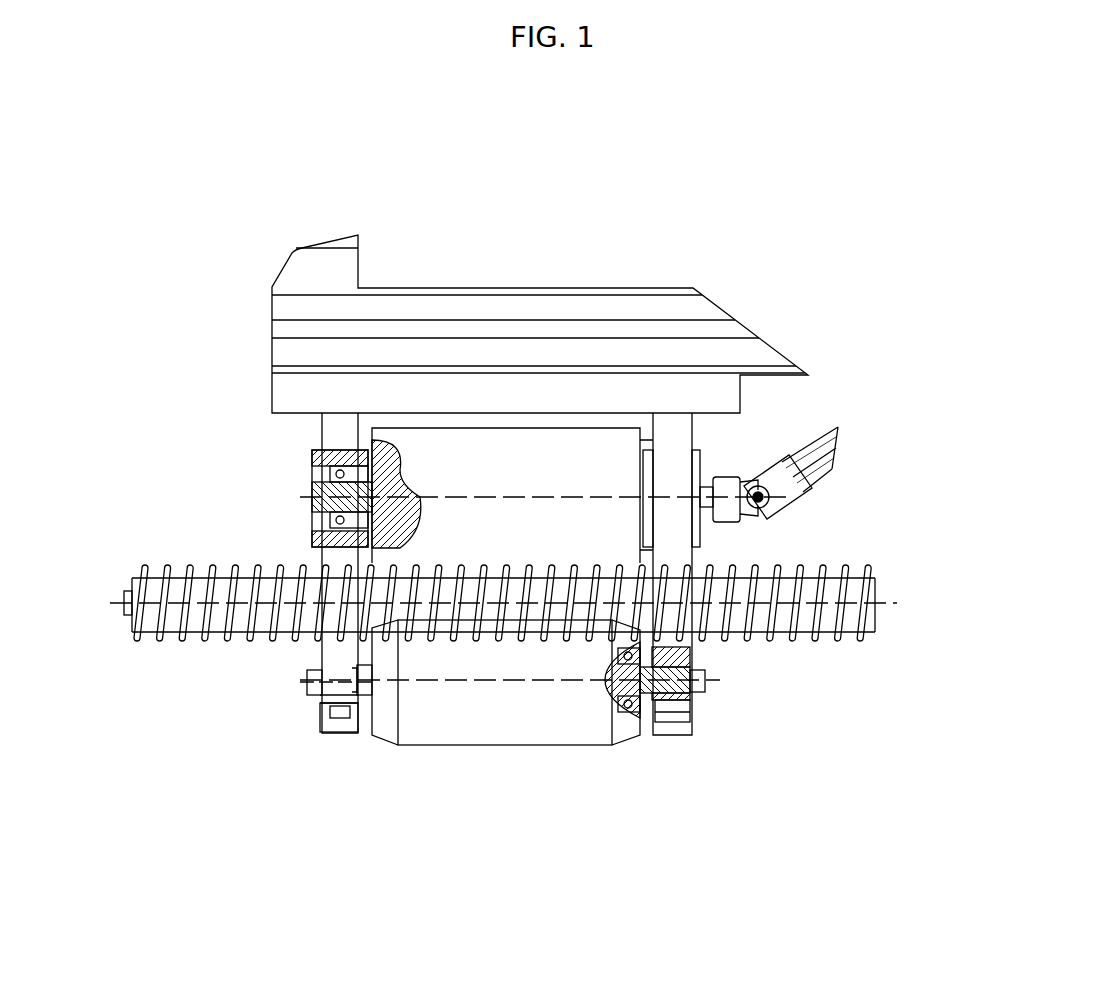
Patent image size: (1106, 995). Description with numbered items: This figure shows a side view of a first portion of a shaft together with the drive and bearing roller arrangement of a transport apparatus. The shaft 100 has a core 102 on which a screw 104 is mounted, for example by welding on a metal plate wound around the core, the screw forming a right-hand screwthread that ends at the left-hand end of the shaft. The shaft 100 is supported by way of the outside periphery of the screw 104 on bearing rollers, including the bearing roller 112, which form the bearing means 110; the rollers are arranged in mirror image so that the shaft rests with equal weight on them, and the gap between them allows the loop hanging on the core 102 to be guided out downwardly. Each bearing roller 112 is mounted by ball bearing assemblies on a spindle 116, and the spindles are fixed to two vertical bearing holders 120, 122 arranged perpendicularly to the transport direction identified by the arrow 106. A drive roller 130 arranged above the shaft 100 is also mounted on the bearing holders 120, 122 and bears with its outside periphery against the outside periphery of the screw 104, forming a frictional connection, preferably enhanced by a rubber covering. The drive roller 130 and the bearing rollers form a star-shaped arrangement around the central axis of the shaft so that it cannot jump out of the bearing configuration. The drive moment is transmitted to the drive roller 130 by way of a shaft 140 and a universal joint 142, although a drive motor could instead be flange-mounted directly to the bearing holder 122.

The shaft 100 is at (232, 660).
The core 102 is at (145, 615).
The screw 104 is at (238, 567).
The arrow 106 is at (972, 516).
The bearing means 110 is at (585, 767).
The bearing roller 112 is at (485, 718).
The spindle 116 is at (640, 720).
The bearing holder 120 is at (338, 645).
The bearing holder 122 is at (668, 632).
The drive roller 130 is at (580, 475).
The shaft 140 is at (841, 437).
The universal joint 142 is at (734, 483).